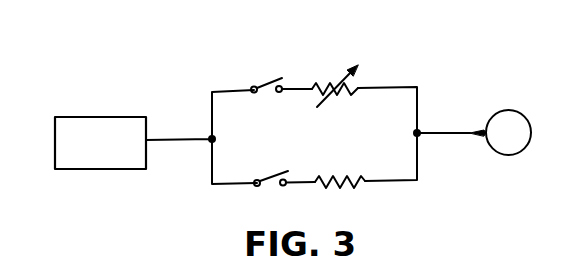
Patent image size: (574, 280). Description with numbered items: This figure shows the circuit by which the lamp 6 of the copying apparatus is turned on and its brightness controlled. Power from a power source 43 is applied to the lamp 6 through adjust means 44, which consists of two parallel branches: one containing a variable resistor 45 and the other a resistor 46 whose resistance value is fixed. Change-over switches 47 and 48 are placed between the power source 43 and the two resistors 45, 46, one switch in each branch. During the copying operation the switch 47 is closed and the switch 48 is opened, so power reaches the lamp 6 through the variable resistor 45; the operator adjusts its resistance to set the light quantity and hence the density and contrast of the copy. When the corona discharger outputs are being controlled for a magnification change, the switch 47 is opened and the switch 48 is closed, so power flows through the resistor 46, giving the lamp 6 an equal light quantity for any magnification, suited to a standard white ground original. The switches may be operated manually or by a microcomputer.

The lamp 6 is at (505, 113).
The power source 43 is at (92, 117).
The adjust means 44 is at (399, 57).
The variable resistor 45 is at (331, 80).
The resistor 46 is at (350, 176).
The change-over switch 47 is at (272, 77).
The change-over switch 48 is at (276, 174).